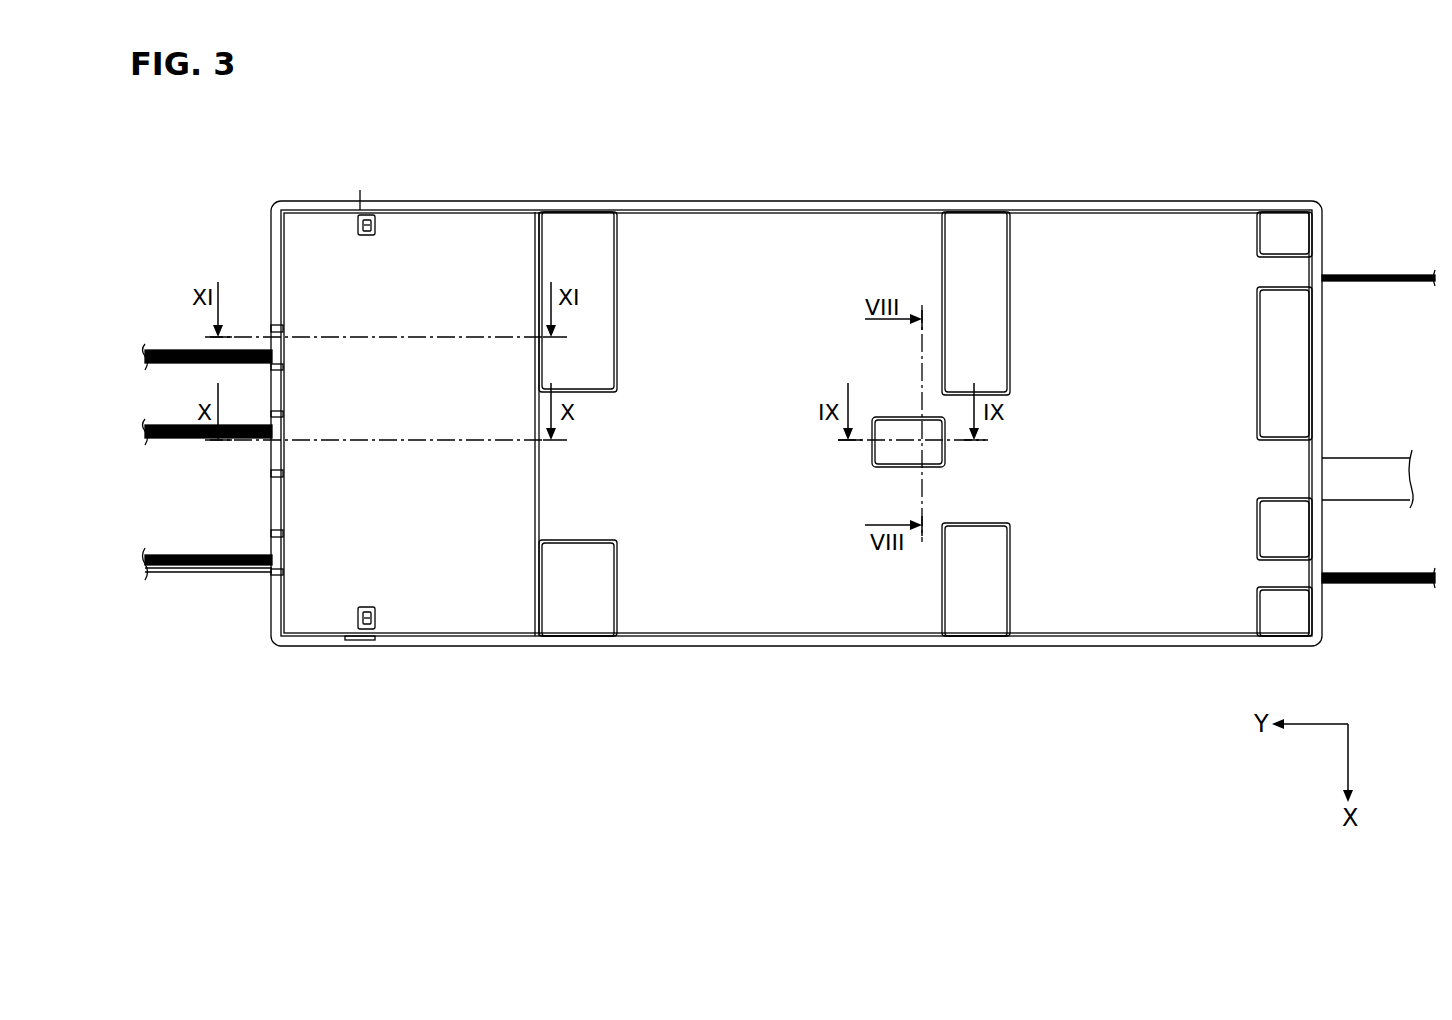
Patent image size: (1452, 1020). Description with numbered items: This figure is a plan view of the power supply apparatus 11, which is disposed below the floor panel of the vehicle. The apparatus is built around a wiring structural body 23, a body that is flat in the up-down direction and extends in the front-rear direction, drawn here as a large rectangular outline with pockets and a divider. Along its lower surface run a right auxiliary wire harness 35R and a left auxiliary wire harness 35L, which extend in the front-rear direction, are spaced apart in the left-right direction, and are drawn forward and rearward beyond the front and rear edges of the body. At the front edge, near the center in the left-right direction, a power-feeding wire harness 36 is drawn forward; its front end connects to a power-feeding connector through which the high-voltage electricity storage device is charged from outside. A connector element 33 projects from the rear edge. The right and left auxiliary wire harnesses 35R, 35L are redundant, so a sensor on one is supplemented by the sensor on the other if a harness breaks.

The power supply apparatus 11 is at (1083, 180).
The wiring structural body 23 is at (1167, 233).
The connector 33 is at (1362, 472).
The right auxiliary wire harness 35R is at (168, 350).
The left auxiliary wire harness 35L is at (202, 572).
The power-feeding wire harness 36 is at (182, 440).